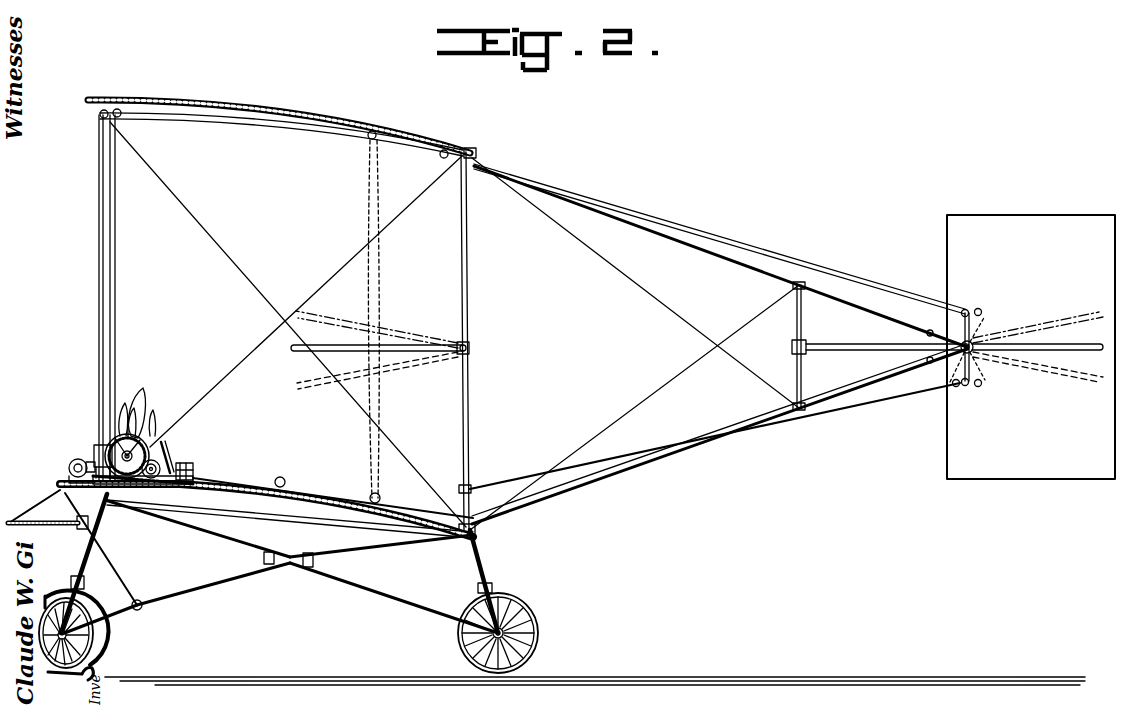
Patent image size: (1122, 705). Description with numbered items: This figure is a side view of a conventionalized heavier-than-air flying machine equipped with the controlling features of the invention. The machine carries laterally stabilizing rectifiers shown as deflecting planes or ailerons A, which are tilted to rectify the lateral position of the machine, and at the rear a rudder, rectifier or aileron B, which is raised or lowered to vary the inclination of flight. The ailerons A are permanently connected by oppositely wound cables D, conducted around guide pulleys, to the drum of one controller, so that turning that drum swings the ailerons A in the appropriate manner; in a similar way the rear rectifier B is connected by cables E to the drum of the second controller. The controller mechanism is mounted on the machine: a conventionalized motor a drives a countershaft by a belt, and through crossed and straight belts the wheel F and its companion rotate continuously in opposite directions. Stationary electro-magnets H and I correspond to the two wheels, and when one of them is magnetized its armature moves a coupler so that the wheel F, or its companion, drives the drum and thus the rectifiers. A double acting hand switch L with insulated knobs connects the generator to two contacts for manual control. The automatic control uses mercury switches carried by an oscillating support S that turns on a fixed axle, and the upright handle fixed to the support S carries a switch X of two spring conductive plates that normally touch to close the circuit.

The ailerons A is at (292, 351).
The rear aileron B is at (1049, 349).
The cables D is at (260, 122).
The cables E is at (98, 292).
The wheel F is at (172, 446).
The electro-magnet H is at (160, 465).
The electro-magnet I is at (187, 460).
The hand switch L is at (98, 448).
The oscillating support S is at (112, 437).
The switch X is at (135, 418).
The motor a is at (70, 462).